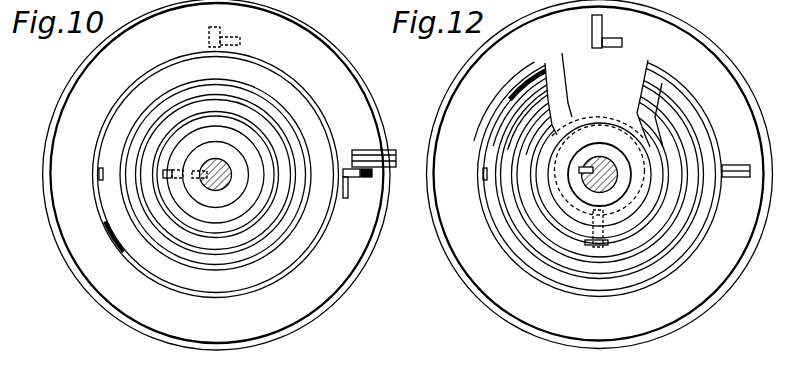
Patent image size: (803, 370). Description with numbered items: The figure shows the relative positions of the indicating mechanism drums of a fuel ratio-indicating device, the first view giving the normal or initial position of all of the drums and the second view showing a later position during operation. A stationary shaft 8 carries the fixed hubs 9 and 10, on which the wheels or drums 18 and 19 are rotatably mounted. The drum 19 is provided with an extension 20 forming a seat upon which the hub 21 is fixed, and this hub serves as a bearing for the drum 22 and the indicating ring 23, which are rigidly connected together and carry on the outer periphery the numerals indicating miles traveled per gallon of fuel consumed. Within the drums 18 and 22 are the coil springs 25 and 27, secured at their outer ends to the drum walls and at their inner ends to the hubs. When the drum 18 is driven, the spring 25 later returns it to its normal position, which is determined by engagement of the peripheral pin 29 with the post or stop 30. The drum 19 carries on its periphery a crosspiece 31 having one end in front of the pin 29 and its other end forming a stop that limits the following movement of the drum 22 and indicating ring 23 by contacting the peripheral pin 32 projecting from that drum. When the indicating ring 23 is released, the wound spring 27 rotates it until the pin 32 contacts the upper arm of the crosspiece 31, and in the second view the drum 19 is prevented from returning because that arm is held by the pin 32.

In FIG. 10, the stationary shaft 8 is at (218, 163).
In FIG. 12, the stationary shaft 8 is at (604, 181).
In FIG. 10, the hub 9 is at (202, 189).
In FIG. 12, the hub 10 is at (592, 148).
In FIG. 10, the drum 18 is at (127, 256).
In FIG. 12, the drum 19 is at (636, 95).
In FIG. 12, the extension 20 is at (575, 140).
In FIG. 12, the hub 21 is at (572, 225).
In FIG. 12, the drum 22 is at (523, 270).
In FIG. 10, the indicating ring 23 is at (83, 282).
In FIG. 12, the indicating ring 23 is at (460, 285).
In FIG. 10, the coil spring 25 is at (188, 283).
In FIG. 12, the coil spring 27 is at (648, 265).
In FIG. 10, the peripheral pin 29 is at (211, 36).
In FIG. 10, the post or stop 30 is at (372, 153).
In FIG. 10, the crosspiece 31 is at (238, 40).
In FIG. 12, the crosspiece 31 is at (613, 41).
In FIG. 10, the peripheral pin 32 is at (370, 176).
In FIG. 12, the peripheral pin 32 is at (593, 30).